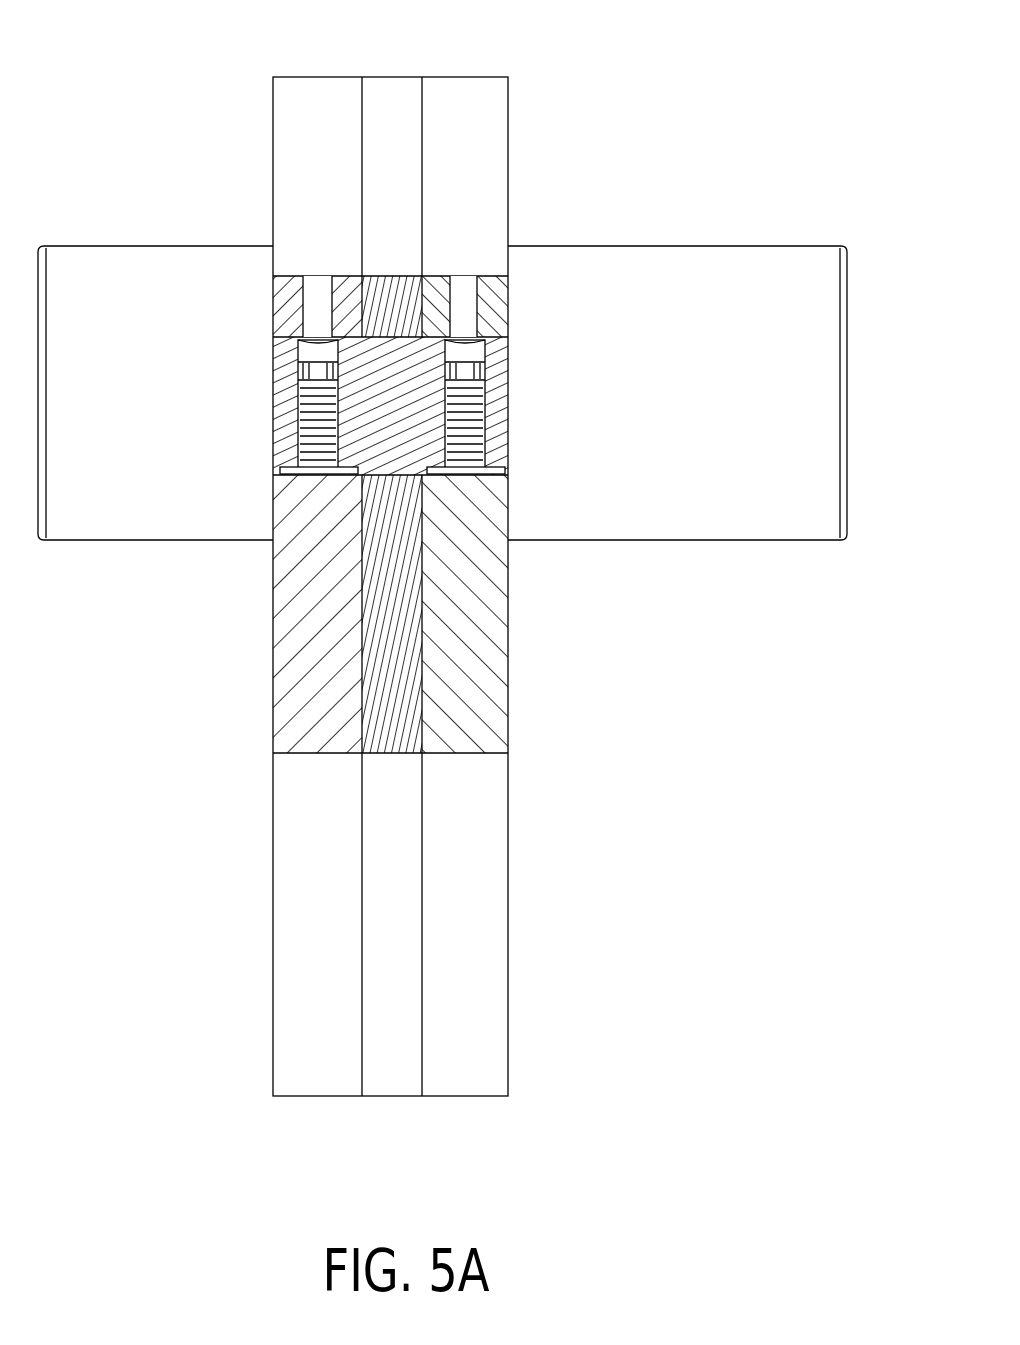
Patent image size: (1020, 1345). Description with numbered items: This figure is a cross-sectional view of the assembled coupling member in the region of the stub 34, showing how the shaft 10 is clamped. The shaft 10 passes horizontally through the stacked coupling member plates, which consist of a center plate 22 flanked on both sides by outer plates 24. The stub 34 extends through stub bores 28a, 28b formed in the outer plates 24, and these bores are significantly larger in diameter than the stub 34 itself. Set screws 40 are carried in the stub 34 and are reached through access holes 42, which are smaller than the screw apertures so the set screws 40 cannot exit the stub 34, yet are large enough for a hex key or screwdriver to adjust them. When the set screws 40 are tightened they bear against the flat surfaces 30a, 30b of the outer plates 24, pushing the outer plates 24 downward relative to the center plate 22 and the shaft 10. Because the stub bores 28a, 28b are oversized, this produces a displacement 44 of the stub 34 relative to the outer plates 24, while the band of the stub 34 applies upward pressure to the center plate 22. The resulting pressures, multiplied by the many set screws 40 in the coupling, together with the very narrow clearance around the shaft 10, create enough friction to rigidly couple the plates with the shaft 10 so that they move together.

The shaft 10 is at (675, 246).
The center plate 22 is at (390, 77).
The outer plates 24 is at (317, 77).
The stub bore 28a is at (273, 338).
The stub bore 28b is at (503, 339).
The flat surface 30a is at (273, 473).
The flat surface 30b is at (505, 462).
The stub 34 is at (503, 425).
The set screws 40 is at (310, 416).
The access holes 42 is at (319, 288).
The displacement 44 is at (512, 471).